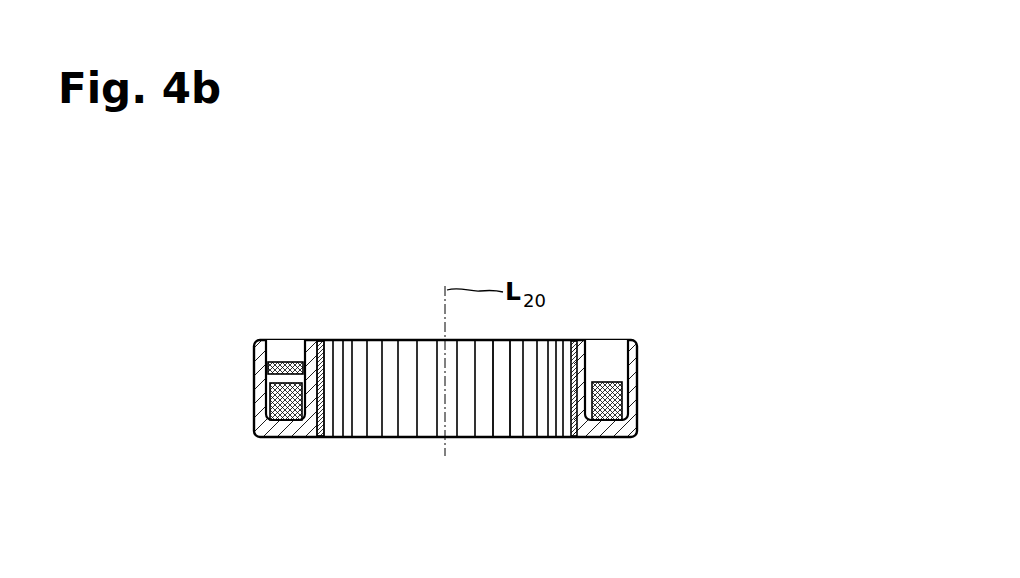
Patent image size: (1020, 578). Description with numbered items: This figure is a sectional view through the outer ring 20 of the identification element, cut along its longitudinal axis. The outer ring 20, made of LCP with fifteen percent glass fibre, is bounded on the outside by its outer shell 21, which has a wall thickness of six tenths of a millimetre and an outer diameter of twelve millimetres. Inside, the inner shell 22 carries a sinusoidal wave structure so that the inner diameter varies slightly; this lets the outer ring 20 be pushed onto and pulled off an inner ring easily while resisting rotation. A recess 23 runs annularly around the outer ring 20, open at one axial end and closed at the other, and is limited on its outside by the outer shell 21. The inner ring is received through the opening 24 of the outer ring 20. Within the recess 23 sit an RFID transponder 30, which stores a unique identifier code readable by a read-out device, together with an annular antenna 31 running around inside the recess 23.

The outer ring 20 is at (690, 263).
The outer shell 21 is at (622, 405).
The inner shell 22 is at (322, 408).
The recess 23 is at (606, 354).
The opening 24 is at (500, 417).
The RFID transponder 30 is at (270, 366).
The annular antenna 31 is at (273, 405).